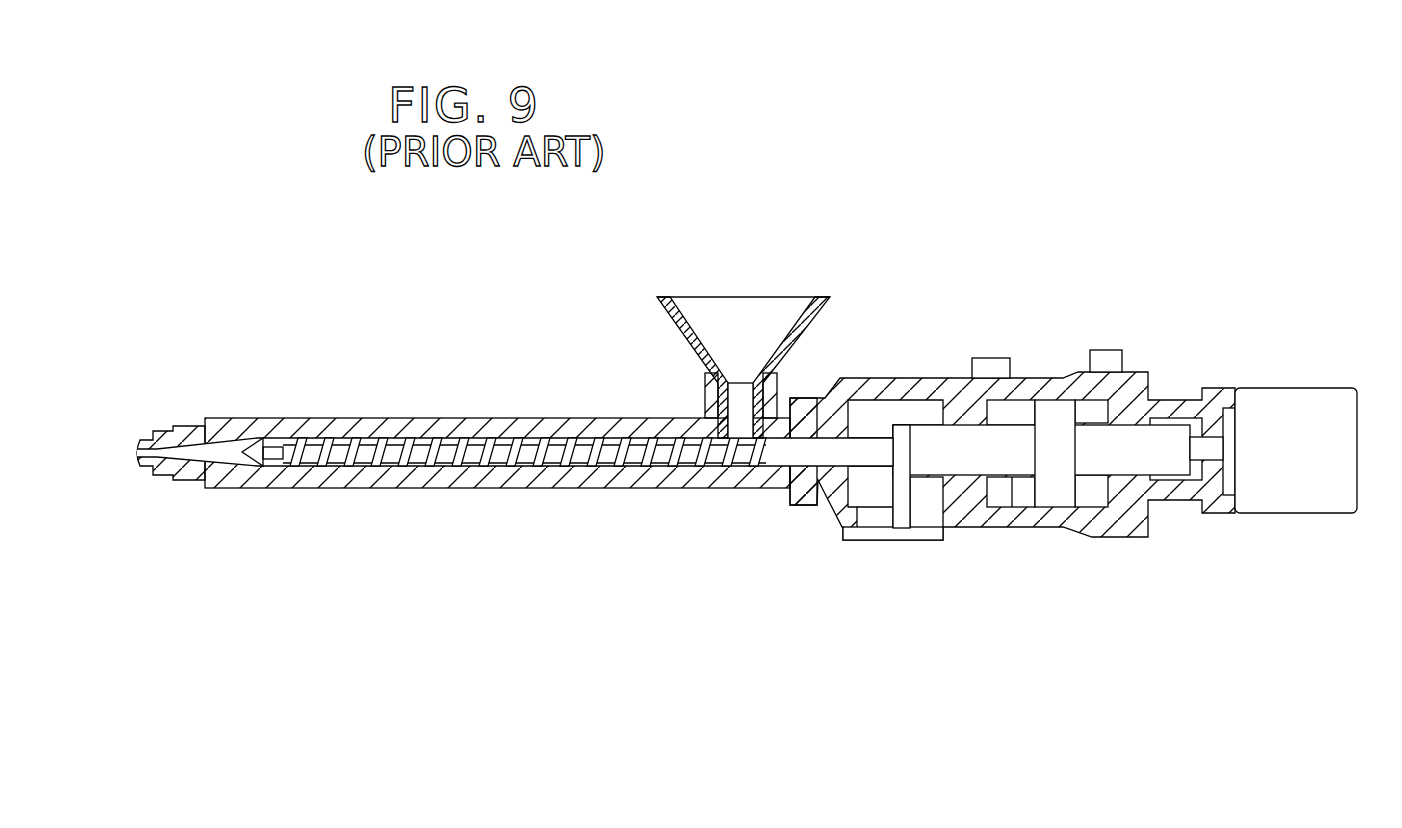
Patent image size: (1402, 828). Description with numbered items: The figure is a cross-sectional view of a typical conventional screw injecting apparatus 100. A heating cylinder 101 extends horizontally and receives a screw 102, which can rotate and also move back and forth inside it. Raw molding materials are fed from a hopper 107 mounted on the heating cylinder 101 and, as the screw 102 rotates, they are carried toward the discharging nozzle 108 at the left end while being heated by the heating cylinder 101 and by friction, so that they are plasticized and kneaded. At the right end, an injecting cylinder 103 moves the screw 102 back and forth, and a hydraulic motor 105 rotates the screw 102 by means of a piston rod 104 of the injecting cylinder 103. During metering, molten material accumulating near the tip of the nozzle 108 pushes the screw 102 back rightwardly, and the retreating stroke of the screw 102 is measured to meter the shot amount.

The screw injecting apparatus 100 is at (1104, 236).
The heating cylinder 101 is at (635, 488).
The screw 102 is at (478, 466).
The injecting cylinder 103 is at (1055, 525).
The piston rod 104 is at (1003, 522).
The hydraulic motor 105 is at (1297, 513).
The hopper 107 is at (828, 296).
The discharging nozzle 108 is at (137, 452).